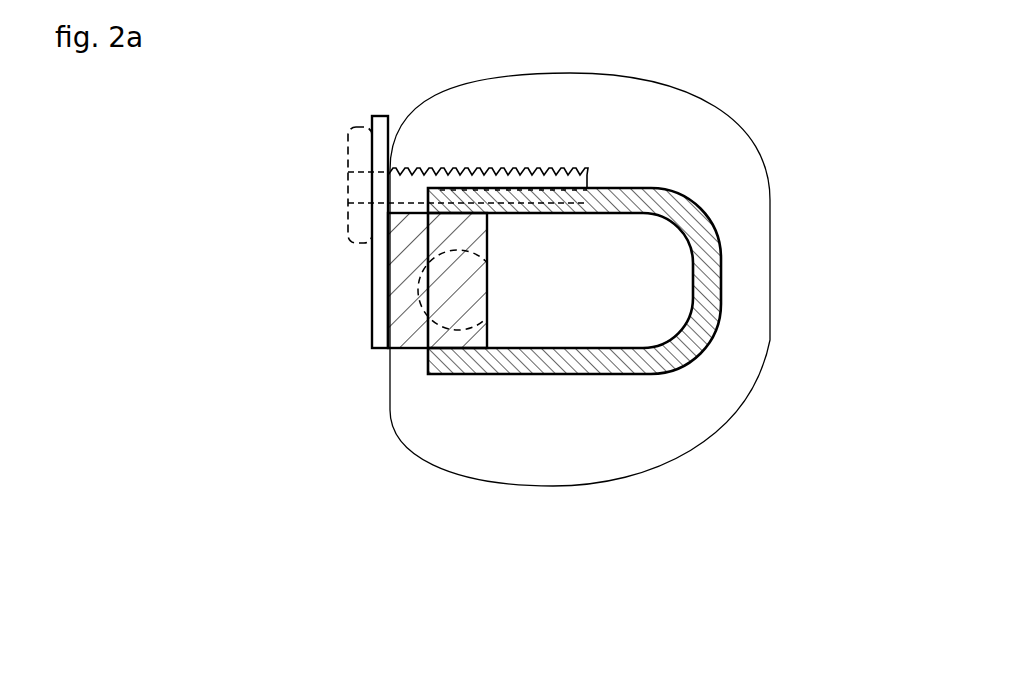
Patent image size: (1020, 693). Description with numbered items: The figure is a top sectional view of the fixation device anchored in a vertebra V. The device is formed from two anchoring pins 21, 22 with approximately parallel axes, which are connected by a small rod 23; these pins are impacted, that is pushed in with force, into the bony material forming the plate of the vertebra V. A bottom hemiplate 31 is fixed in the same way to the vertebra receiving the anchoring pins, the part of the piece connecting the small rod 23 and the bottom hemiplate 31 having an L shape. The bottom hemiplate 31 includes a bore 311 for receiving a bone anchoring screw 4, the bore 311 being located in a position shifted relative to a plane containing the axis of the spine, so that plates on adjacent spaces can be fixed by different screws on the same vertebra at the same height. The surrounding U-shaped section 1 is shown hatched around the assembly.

The vertebra V is at (720, 160).
The U-shaped bracket 1 is at (713, 265).
The bone anchoring screw 4 is at (457, 177).
The anchoring pin 21 is at (447, 245).
The anchoring pin 22 is at (450, 318).
The small rod 23 is at (437, 300).
The bottom hemiplate 31 is at (373, 292).
The bore 311 is at (383, 180).